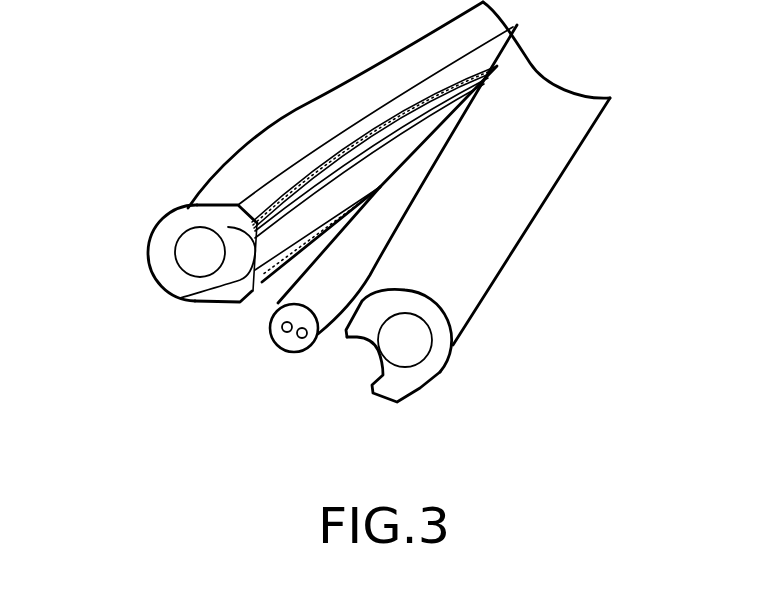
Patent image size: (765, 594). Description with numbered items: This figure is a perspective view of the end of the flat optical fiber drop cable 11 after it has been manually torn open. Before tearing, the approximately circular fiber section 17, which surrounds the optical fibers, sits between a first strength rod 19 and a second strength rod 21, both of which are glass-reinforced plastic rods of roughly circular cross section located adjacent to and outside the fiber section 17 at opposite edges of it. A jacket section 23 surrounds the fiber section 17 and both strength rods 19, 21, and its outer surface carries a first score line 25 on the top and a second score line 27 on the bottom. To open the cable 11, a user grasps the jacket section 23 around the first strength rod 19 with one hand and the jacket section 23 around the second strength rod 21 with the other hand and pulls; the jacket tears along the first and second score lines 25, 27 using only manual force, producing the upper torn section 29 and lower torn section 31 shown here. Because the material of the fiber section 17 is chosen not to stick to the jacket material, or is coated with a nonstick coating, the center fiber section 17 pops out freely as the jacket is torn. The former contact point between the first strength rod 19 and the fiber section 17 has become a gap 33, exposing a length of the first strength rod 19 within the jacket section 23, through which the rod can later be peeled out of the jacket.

The cable 11 is at (572, 210).
The fiber section 17 is at (320, 334).
The first strength rod 19 is at (188, 255).
The second strength rod 21 is at (413, 338).
The jacket section 23 is at (170, 223).
The first score line 25 is at (258, 198).
The second score line 27 is at (251, 290).
The upper torn section 29 is at (343, 150).
The lower torn section 31 is at (255, 282).
The gap 33 is at (180, 298).